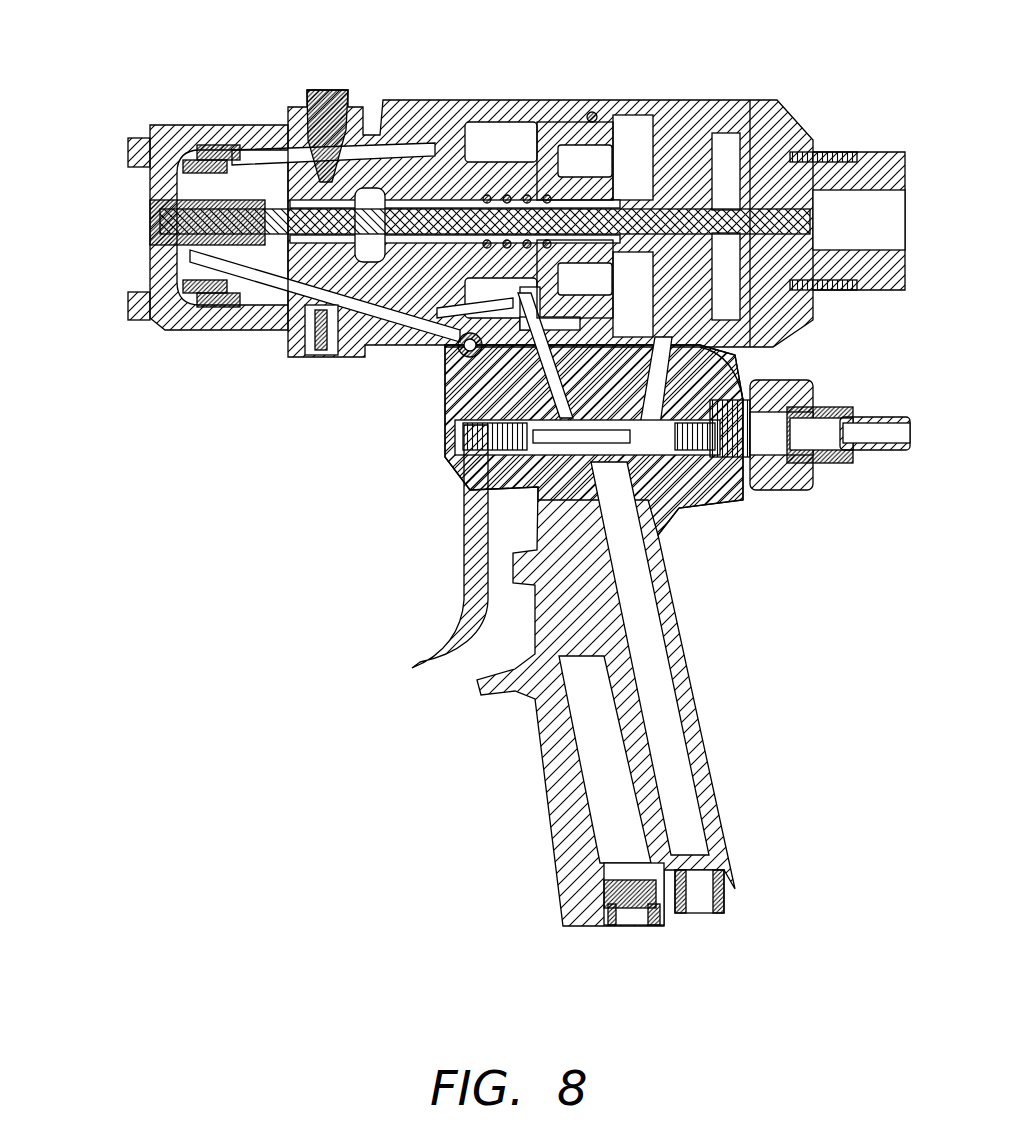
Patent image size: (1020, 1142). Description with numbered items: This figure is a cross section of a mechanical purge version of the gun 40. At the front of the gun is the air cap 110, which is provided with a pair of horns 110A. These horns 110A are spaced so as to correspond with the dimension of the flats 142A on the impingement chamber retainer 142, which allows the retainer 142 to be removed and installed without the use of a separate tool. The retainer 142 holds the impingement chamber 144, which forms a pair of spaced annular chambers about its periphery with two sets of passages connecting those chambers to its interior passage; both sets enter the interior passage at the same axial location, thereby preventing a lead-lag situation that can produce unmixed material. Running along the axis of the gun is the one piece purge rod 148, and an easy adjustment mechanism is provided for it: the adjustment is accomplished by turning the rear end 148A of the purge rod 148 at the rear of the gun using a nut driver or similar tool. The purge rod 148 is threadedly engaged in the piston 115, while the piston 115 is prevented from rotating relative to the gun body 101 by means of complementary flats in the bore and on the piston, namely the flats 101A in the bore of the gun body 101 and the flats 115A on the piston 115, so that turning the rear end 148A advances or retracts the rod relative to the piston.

The gun 40 is at (485, 466).
The gun body 101 is at (457, 110).
The flats in the bore 101A is at (688, 362).
The air cap 110 is at (155, 138).
The horns 110A is at (128, 152).
The piston 115 is at (548, 142).
The flats on the piston 115A is at (592, 117).
The impingement chamber retainer 142 is at (213, 157).
The flats 142A is at (197, 167).
The impingement chamber 144 is at (217, 237).
The purge rod 148 is at (633, 197).
The rear end 148A is at (790, 213).